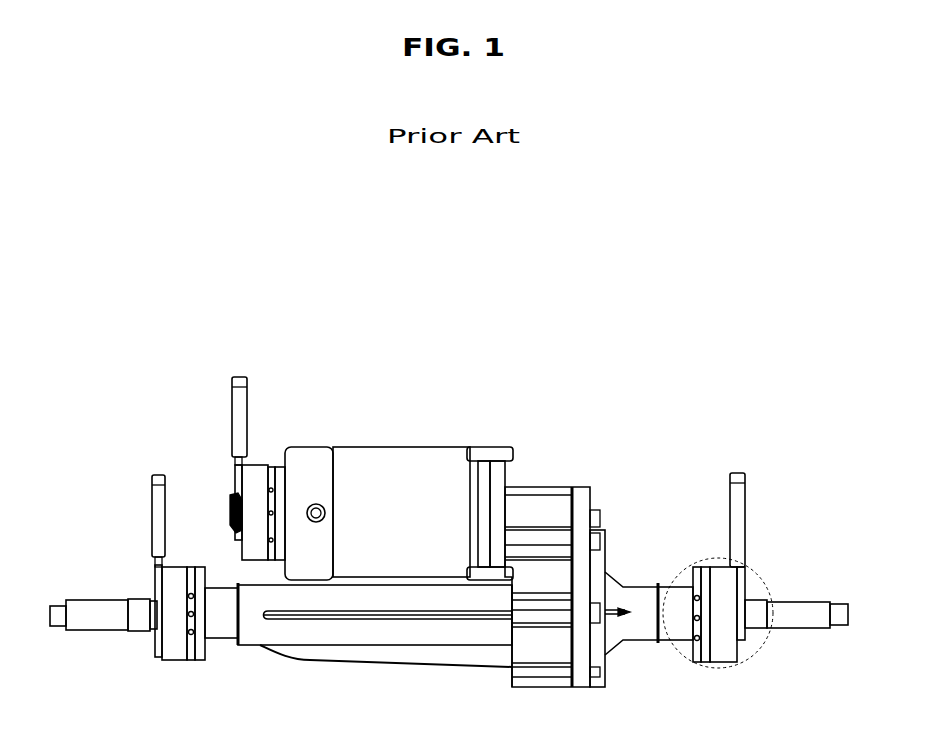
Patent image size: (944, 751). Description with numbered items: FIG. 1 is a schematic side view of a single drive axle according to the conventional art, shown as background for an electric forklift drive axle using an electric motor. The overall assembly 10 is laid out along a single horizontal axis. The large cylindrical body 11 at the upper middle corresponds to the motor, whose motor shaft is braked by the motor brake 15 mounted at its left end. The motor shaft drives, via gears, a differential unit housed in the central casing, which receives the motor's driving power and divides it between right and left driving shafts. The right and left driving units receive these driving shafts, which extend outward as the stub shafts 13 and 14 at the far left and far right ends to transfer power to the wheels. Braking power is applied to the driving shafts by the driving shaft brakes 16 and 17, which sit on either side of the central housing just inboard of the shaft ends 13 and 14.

The prior art axle assembly 10 is at (110, 357).
The motor 11 is at (395, 448).
The left axle shaft 13 is at (100, 599).
The right axle shaft 14 is at (797, 599).
The motor brake 15 is at (267, 461).
The driving shaft brake 16 is at (185, 562).
The driving shaft brake 17 is at (713, 563).